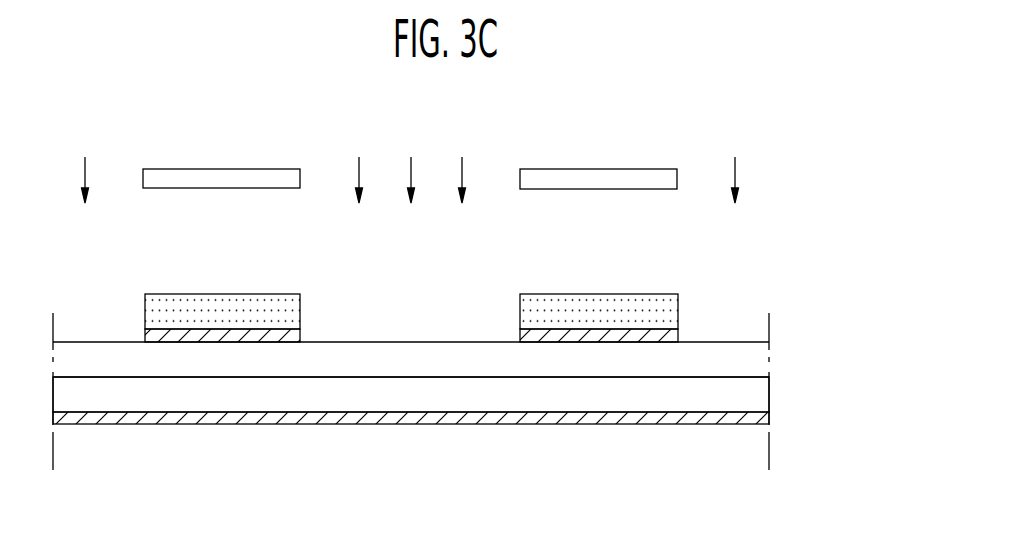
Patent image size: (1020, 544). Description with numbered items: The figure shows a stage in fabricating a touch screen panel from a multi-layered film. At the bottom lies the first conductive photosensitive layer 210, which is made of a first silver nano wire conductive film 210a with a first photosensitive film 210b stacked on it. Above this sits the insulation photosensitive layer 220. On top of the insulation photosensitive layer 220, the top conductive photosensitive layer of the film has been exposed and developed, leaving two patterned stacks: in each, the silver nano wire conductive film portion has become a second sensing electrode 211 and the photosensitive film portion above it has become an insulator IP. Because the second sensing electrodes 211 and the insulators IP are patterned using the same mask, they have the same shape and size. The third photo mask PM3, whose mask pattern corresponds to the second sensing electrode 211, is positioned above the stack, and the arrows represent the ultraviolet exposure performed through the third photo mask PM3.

The third photo mask PM3 is at (617, 150).
The insulator IP is at (302, 313).
The second sensing electrode 211 is at (302, 338).
The insulation photosensitive layer 220 is at (769, 365).
The first conductive photosensitive layer 210 is at (470, 404).
The first silver nano wire conductive film 210a is at (769, 419).
The first photosensitive film 210b is at (769, 392).